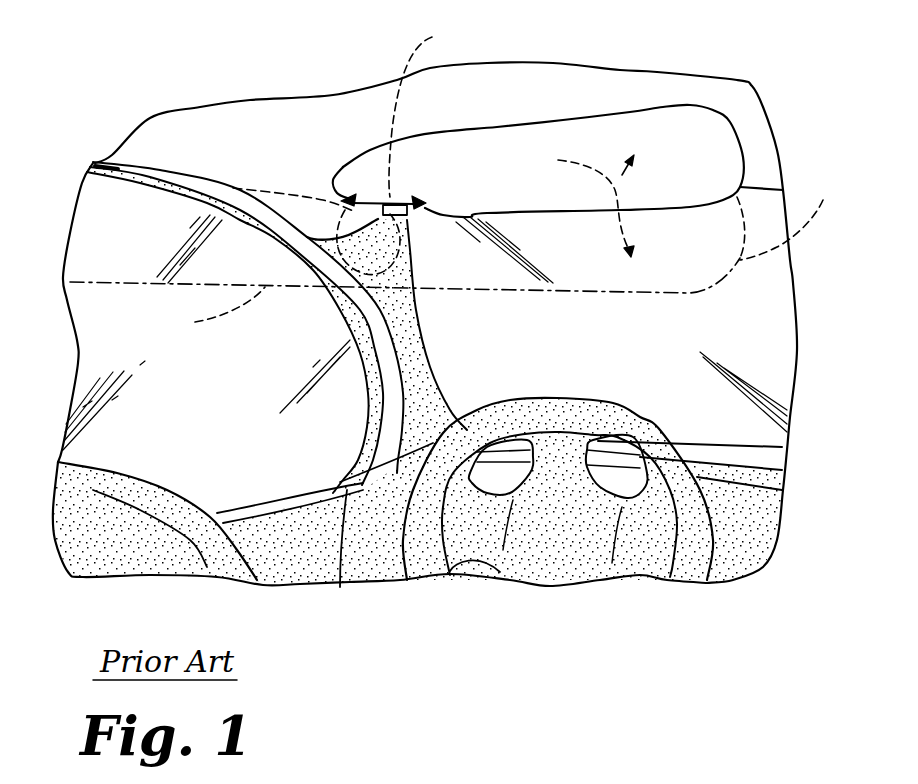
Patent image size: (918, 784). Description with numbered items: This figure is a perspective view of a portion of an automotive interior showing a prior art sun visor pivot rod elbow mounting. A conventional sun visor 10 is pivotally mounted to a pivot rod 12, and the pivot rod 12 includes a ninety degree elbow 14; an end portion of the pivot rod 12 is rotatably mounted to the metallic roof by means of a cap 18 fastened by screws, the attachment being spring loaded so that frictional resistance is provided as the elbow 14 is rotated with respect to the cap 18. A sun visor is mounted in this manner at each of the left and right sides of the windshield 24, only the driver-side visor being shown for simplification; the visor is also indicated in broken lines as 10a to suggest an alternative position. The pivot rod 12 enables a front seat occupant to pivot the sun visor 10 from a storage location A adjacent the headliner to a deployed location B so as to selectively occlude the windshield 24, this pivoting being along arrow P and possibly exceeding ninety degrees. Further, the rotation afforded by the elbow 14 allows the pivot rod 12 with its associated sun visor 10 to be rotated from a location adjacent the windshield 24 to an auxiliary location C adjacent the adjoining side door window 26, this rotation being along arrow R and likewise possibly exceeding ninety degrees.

The sun visor 10 is at (608, 112).
The sun visor in lowered position 10a is at (560, 213).
The pivot rod 12 is at (408, 220).
The ninety degree elbow 14 is at (376, 219).
The cap 18 is at (379, 205).
The windshield 24 is at (543, 367).
The side door window 26 is at (212, 406).
The storage location A is at (723, 117).
The deployed location B is at (790, 216).
The auxiliary location C is at (218, 311).
The arrow P is at (585, 201).
The arrow R is at (422, 110).